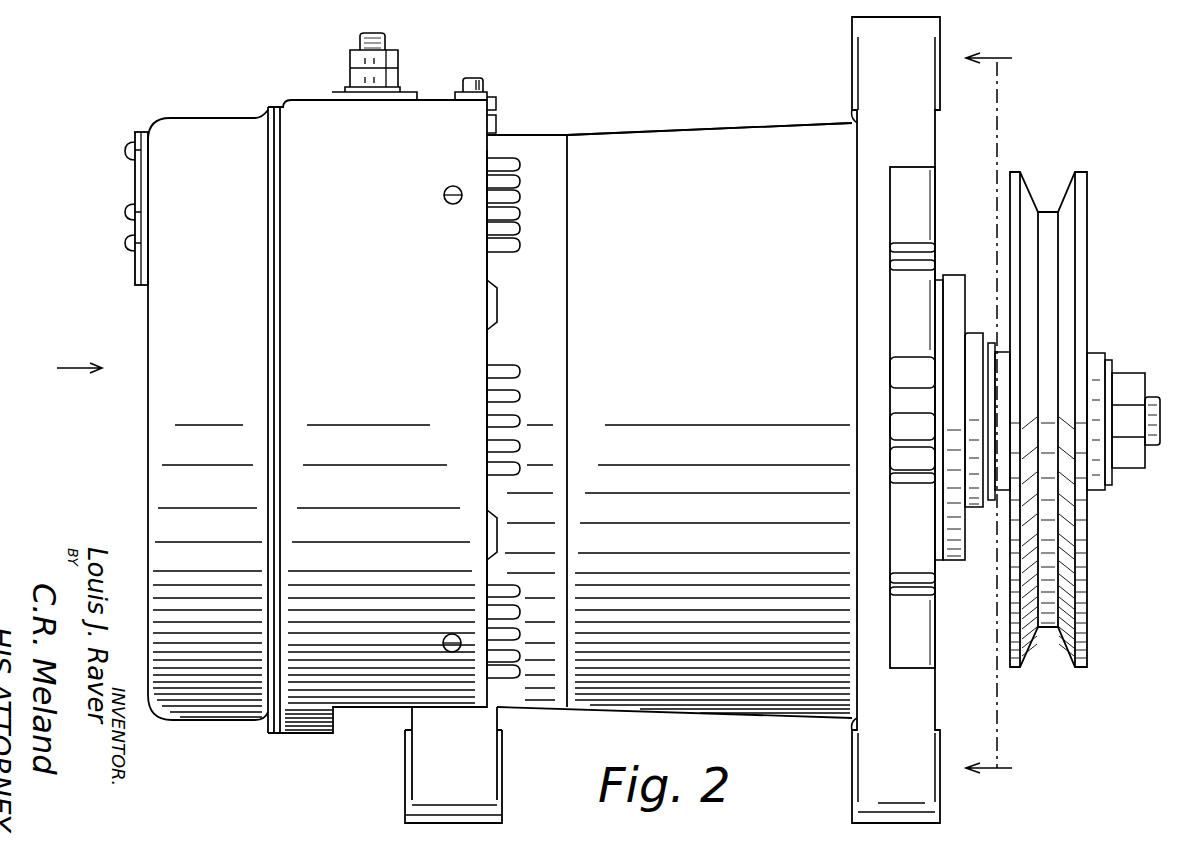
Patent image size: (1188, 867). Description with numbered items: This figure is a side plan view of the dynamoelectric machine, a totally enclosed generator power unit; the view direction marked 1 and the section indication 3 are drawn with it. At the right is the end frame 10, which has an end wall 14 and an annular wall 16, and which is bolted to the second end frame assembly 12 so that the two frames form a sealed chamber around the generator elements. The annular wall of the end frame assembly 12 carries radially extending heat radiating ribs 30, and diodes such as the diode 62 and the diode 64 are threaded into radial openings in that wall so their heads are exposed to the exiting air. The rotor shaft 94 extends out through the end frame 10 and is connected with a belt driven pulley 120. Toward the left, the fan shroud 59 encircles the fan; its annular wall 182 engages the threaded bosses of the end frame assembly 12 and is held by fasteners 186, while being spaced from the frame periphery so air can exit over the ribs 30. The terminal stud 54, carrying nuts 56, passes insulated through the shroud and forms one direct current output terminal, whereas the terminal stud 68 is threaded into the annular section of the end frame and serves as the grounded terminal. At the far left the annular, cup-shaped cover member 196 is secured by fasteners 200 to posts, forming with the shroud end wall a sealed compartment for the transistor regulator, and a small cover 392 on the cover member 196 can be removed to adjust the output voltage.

The viewing direction arrow 1 is at (67, 372).
The section line 3- 3 is at (990, 417).
The end frame 10 is at (750, 125).
The end frame assembly 12 is at (405, 750).
The end wall 14 is at (940, 155).
The annular wall 16 is at (690, 137).
The radially extending ribs 30 is at (517, 180).
The terminal stud 54 is at (360, 37).
The nuts 56 is at (352, 73).
The fan shroud 59 is at (522, 266).
The diode 62 is at (497, 308).
The diode 64 is at (497, 545).
The terminal stud 68 is at (468, 78).
The shaft 94 is at (1155, 395).
The pulley 120 is at (1080, 263).
The annular wall 182 is at (318, 106).
The fasteners 186 is at (443, 195).
The cover member 196 is at (160, 428).
The fasteners 200 is at (127, 147).
The cover 392 is at (140, 172).